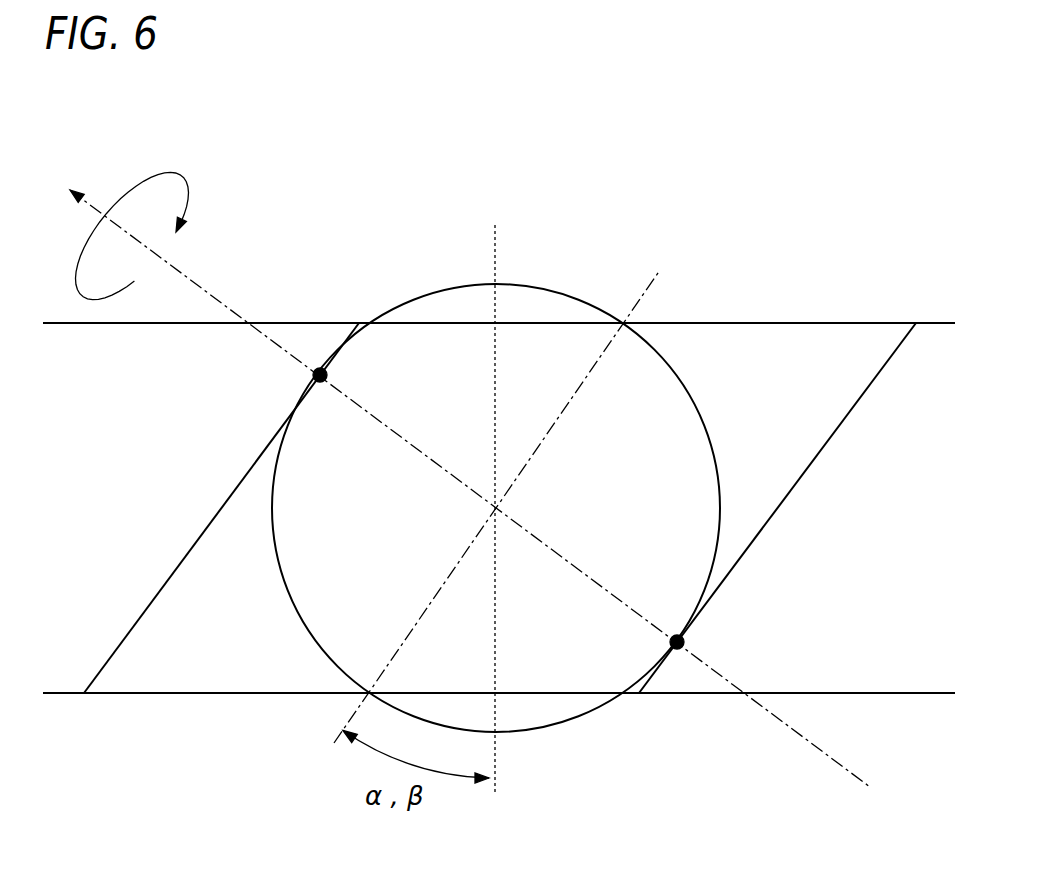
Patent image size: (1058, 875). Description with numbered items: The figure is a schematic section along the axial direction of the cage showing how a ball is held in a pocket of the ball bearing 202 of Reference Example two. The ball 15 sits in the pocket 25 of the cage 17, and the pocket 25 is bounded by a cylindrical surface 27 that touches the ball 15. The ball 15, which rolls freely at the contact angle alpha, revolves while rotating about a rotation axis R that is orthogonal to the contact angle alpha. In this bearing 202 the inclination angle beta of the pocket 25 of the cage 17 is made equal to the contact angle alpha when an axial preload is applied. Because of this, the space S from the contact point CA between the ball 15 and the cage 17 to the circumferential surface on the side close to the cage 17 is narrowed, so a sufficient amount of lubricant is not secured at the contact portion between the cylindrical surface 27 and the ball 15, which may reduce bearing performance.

The ball 15 is at (562, 725).
The cage 17 is at (932, 323).
The pocket 25 is at (690, 343).
The cylindrical surface 27 is at (118, 650).
The ball bearing 202 is at (285, 225).
The contact point CA is at (315, 374).
The space S is at (357, 323).
The rotation axis R is at (810, 742).